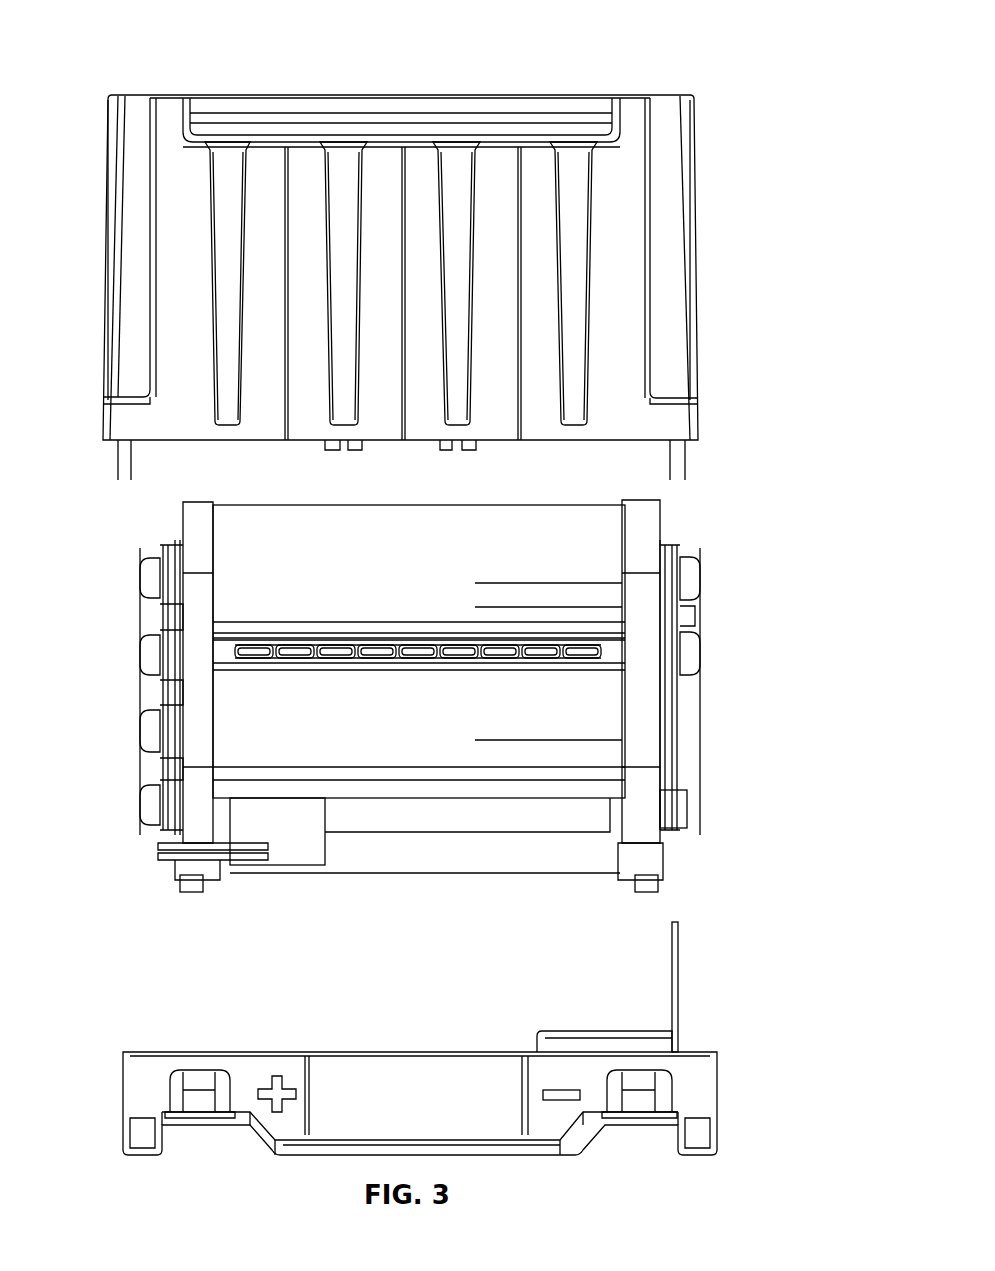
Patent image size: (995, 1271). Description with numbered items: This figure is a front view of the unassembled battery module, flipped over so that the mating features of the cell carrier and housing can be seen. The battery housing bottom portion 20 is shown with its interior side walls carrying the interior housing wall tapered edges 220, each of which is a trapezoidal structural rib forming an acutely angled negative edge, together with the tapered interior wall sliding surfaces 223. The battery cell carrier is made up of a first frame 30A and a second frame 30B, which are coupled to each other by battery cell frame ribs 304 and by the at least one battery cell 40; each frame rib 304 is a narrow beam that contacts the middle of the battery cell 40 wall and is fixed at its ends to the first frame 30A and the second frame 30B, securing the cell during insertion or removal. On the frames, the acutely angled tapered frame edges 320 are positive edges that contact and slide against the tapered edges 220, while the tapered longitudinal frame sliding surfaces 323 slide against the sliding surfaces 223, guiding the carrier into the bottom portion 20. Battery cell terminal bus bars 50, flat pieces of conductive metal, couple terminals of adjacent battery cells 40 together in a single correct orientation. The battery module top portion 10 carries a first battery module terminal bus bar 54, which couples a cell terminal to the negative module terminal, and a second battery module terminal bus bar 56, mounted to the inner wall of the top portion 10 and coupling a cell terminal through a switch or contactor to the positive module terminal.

The battery module top portion 10 is at (727, 942).
The battery housing bottom portion 20 is at (415, 255).
The interior housing wall tapered edge 220 is at (595, 202).
The tapered interior wall sliding surface 223 is at (168, 185).
The first frame 30A is at (124, 748).
The second frame 30B is at (720, 663).
The battery cell 40 is at (483, 520).
The battery cell terminal bus bar 50 is at (163, 620).
The battery cell frame rib 304 is at (605, 652).
The tapered frame edge 320 is at (213, 590).
The tapered longitudinal frame sliding surface 323 is at (183, 800).
The first battery module terminal bus bar 54 is at (672, 950).
The second battery module terminal bus bar 56 is at (557, 1030).